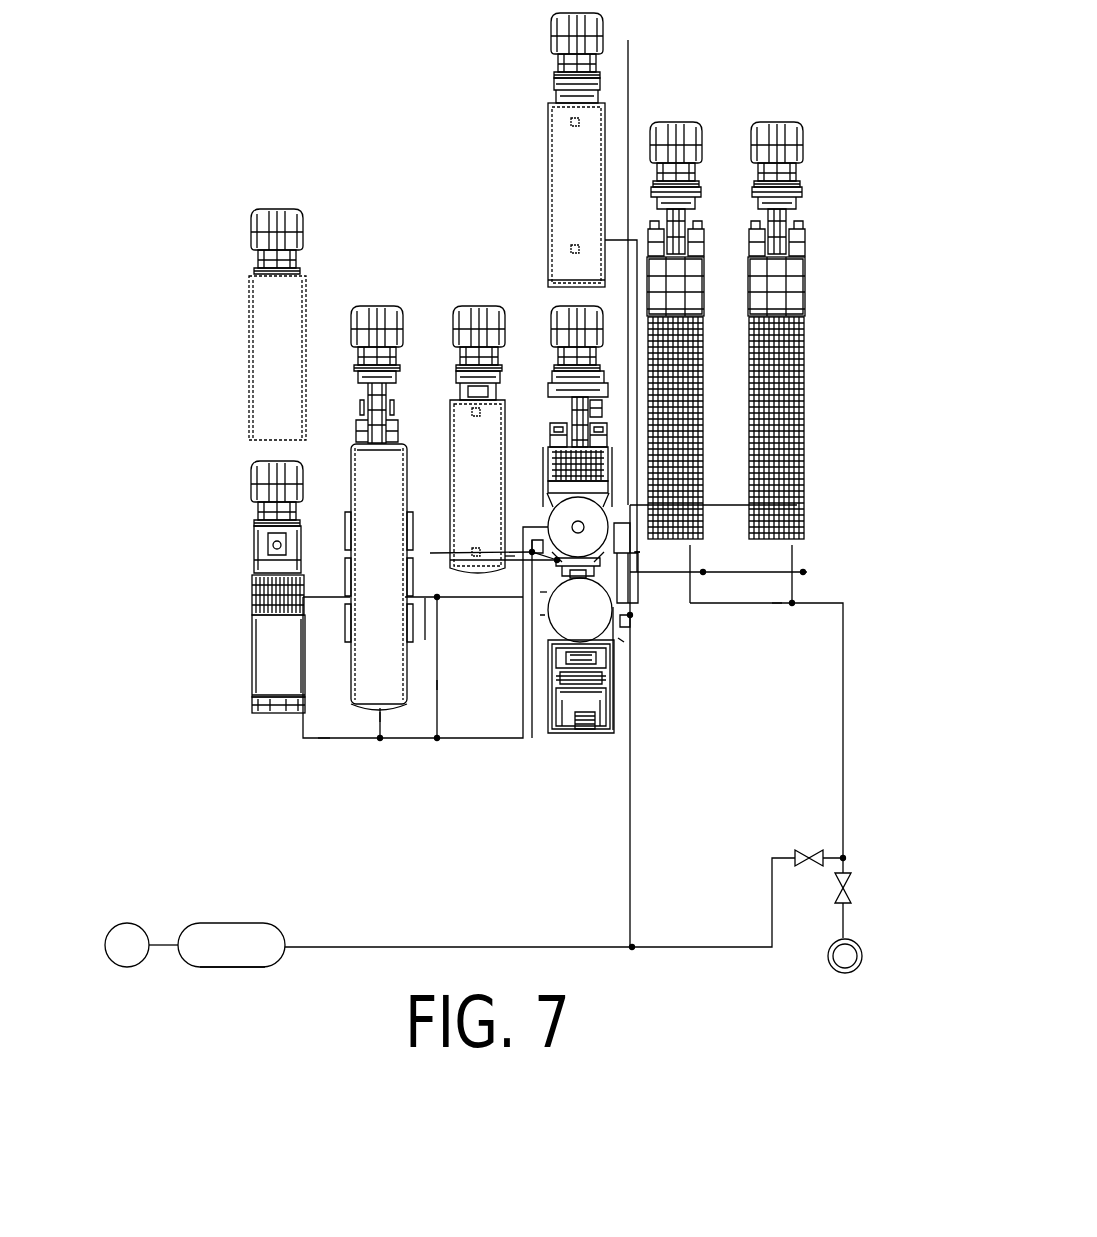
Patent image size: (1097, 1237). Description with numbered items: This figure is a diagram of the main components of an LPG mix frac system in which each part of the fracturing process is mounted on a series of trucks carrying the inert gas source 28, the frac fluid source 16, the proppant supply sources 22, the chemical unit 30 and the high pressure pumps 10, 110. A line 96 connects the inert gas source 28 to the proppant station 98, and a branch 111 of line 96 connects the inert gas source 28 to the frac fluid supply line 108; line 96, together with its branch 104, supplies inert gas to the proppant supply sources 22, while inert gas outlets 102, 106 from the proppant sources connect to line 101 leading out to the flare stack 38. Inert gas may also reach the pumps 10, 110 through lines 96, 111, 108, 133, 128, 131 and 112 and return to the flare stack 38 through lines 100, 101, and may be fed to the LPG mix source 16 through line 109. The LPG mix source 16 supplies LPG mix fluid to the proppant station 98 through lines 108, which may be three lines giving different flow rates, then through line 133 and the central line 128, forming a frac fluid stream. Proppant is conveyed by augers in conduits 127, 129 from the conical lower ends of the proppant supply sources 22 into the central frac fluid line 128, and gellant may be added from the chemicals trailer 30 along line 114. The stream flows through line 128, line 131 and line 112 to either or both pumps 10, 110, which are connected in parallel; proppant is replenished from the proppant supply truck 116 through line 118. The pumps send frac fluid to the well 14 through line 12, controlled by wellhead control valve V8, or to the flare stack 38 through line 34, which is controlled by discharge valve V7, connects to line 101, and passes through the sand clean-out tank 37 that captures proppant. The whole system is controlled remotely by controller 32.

The high pressure pump 10 is at (706, 505).
The high pressure pump 110 is at (752, 440).
The line 12 is at (843, 795).
The well 14 is at (840, 967).
The frac fluid source 16 is at (377, 490).
The proppant supply sources 22 is at (545, 615).
The inert gas source 28 is at (265, 655).
The chemical unit 30 is at (446, 387).
The controller 32 is at (275, 340).
The line 34 is at (313, 945).
The sand clean-out tank 37 is at (222, 967).
The flare stack 38 is at (125, 923).
The line 96 is at (323, 740).
The proppant station 98 is at (560, 733).
The line 100 is at (705, 507).
The line 101 is at (630, 888).
The inert gas outlet 102 is at (637, 552).
The branch 104 is at (540, 593).
The inert gas outlet 106 is at (622, 640).
The frac fluid supply line 108 is at (426, 582).
The line 109 is at (378, 720).
The branch 111 is at (438, 680).
The line 112 is at (777, 603).
The line 114 is at (505, 556).
The proppant supply truck 116 is at (524, 150).
The line 118 is at (620, 240).
The conduit 127 is at (430, 553).
The central frac fluid line 128 is at (628, 40).
The conduit 129 is at (547, 592).
The line 131 is at (637, 552).
The line 133 is at (510, 558).
The discharge valve V7 is at (807, 865).
The wellhead control valve V8 is at (848, 890).